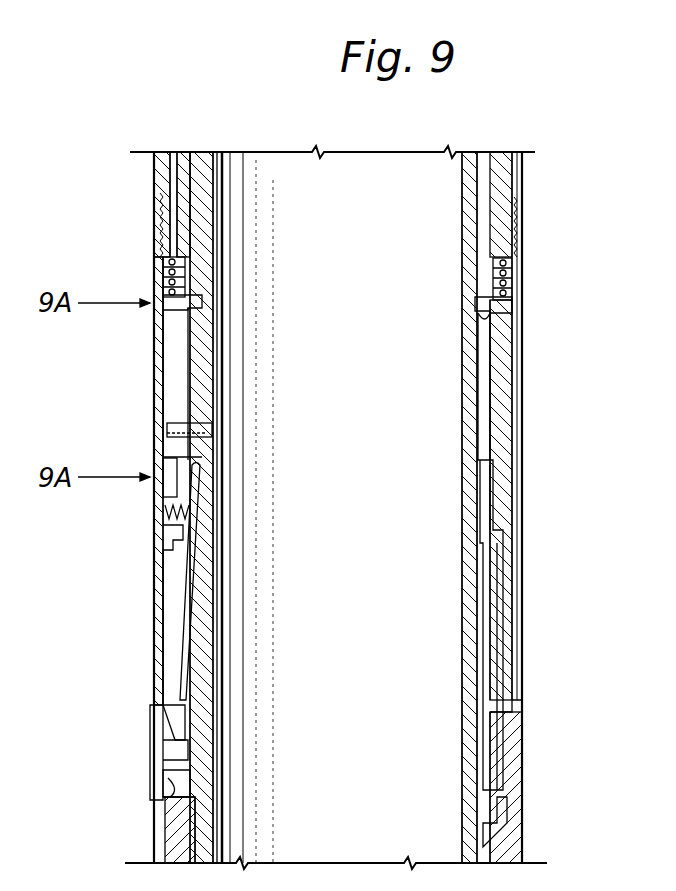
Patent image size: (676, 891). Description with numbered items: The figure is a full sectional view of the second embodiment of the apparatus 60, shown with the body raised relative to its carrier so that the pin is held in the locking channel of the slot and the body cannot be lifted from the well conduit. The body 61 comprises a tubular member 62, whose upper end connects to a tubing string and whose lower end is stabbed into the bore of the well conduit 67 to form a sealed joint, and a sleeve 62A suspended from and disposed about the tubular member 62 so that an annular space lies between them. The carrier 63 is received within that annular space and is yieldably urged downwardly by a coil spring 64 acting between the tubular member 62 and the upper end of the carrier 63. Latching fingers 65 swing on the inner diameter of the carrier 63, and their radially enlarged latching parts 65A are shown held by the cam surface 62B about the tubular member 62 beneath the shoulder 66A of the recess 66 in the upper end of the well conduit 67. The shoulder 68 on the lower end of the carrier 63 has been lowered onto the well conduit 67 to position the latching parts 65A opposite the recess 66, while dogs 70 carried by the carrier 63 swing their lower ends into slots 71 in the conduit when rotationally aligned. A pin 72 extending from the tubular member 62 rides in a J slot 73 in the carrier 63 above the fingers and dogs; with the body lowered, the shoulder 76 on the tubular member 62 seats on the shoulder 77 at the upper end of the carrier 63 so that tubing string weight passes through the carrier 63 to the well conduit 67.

The apparatus 60 is at (524, 485).
The body 61 is at (517, 222).
The tubular member 62 is at (463, 418).
The sleeve 62A is at (522, 371).
The cam surface 62B is at (190, 645).
The carrier 63 is at (505, 420).
The coil spring 64 is at (513, 282).
The latching fingers 65 is at (500, 670).
The latching parts 65A is at (507, 805).
The recess 66 is at (175, 822).
The shoulder 66A is at (170, 780).
The well conduit 67 is at (525, 750).
The shoulder 68 is at (512, 722).
The dogs 70 is at (165, 727).
The slots 71 is at (160, 748).
The pin 72 is at (168, 430).
The J slot 73 is at (180, 354).
The shoulder 76 is at (513, 322).
The shoulder 77 is at (478, 314).